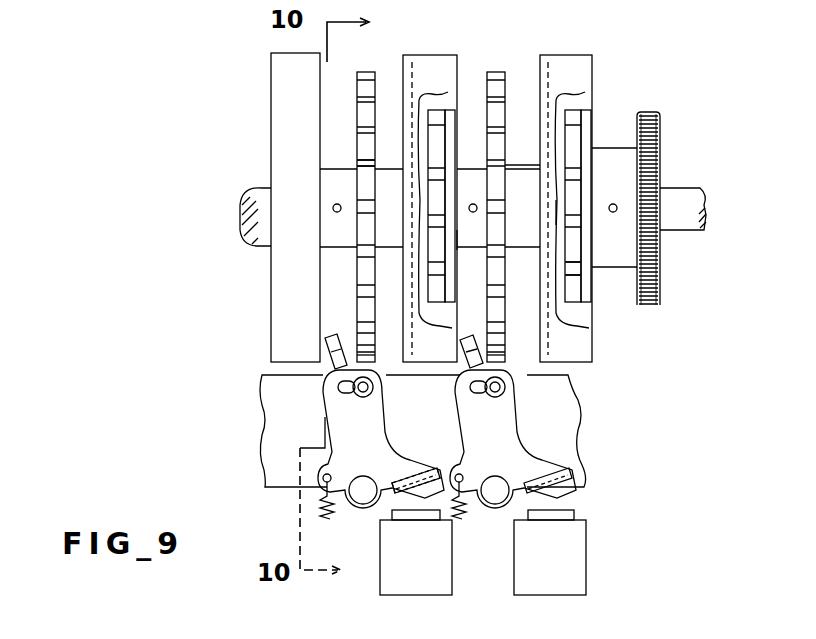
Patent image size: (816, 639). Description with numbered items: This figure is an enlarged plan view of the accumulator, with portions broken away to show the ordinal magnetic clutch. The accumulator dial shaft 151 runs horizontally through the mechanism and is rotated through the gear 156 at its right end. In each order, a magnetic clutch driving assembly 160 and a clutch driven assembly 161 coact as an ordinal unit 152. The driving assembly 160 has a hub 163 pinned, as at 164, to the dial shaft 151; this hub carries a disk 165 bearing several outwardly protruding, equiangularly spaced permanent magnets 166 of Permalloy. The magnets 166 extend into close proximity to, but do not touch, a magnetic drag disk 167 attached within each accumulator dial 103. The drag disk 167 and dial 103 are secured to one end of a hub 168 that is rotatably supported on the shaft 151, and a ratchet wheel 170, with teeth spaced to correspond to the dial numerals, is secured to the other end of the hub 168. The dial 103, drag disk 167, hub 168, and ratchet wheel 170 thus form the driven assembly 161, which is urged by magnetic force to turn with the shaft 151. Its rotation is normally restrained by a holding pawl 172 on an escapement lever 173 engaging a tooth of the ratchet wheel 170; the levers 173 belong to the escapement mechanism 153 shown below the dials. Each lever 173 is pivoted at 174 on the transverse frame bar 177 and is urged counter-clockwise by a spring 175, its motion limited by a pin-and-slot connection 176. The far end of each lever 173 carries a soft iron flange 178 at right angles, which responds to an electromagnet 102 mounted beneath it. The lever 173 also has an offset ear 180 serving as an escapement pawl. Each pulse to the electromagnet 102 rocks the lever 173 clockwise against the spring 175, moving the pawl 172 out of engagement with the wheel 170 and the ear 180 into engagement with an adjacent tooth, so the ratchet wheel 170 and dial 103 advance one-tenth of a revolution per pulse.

The electromagnet 102 is at (422, 588).
The accumulator dial 103 is at (282, 85).
The accumulator dial shaft 151 is at (250, 215).
The ordinal unit 152 is at (584, 108).
The escapement mechanism 153 is at (564, 445).
The gear 156 is at (648, 157).
The magnetic clutch driving assembly 160 is at (605, 143).
The clutch driven assembly 161 is at (526, 167).
The hub 163 is at (475, 232).
The pin 164 is at (473, 203).
The disk 165 is at (585, 122).
The permanent magnets 166 is at (572, 268).
The magnetic drag disk 167 is at (555, 211).
The hub 168 is at (382, 186).
The ratchet wheel 170 is at (364, 86).
The holding pawl 172 is at (372, 363).
The escapement lever 173 is at (380, 424).
The pivot 174 is at (363, 477).
The spring 175 is at (330, 519).
The pin-and-slot connection 176 is at (371, 394).
The transverse frame bar 177 is at (272, 424).
The flange 178 is at (412, 492).
The offset ear 180 is at (333, 333).